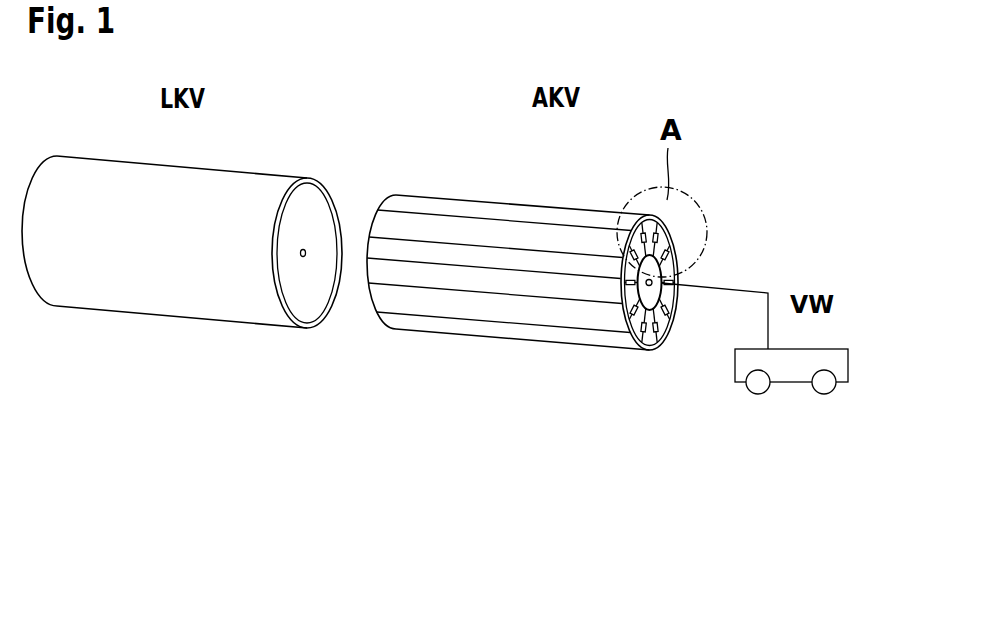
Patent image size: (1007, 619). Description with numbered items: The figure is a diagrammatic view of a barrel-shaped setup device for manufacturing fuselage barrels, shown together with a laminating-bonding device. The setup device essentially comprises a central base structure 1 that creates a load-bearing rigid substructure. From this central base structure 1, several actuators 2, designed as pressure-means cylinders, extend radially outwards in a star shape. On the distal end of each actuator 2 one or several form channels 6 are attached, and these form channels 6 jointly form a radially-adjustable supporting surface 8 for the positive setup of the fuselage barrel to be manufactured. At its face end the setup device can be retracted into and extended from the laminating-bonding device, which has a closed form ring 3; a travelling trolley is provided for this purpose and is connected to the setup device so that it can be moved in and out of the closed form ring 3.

The central base structure 1 is at (664, 340).
The actuator 2 is at (645, 325).
The closed form ring 3 is at (298, 328).
The form channel 6 is at (480, 320).
The supporting surface 8 is at (460, 180).